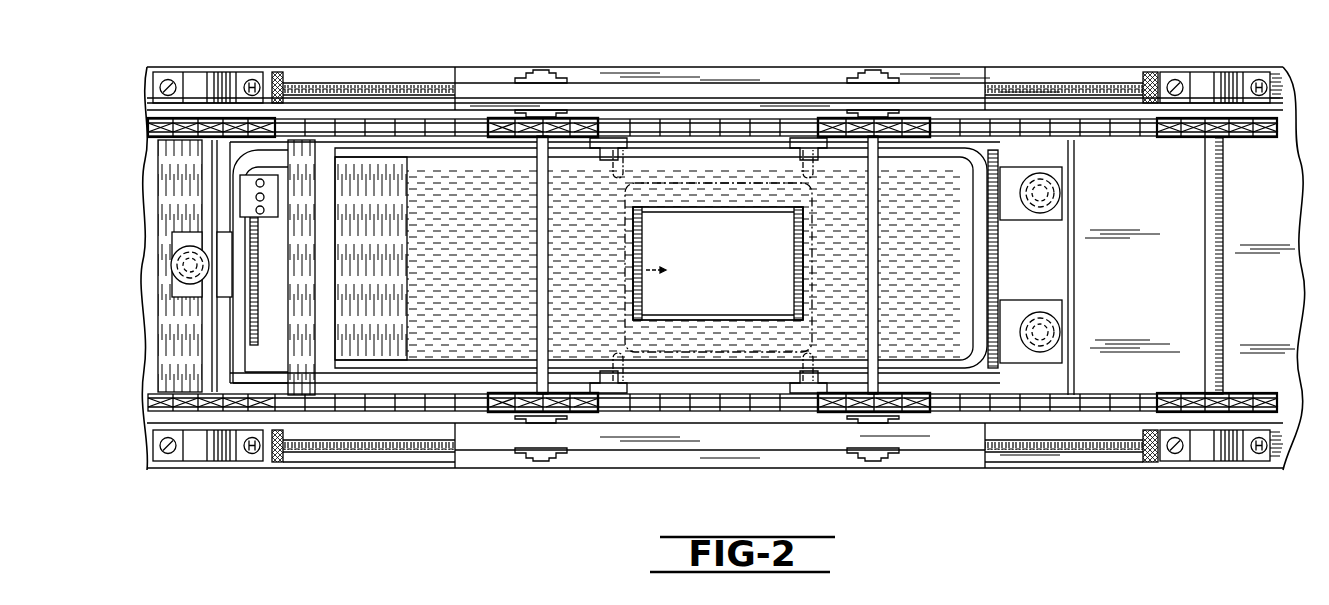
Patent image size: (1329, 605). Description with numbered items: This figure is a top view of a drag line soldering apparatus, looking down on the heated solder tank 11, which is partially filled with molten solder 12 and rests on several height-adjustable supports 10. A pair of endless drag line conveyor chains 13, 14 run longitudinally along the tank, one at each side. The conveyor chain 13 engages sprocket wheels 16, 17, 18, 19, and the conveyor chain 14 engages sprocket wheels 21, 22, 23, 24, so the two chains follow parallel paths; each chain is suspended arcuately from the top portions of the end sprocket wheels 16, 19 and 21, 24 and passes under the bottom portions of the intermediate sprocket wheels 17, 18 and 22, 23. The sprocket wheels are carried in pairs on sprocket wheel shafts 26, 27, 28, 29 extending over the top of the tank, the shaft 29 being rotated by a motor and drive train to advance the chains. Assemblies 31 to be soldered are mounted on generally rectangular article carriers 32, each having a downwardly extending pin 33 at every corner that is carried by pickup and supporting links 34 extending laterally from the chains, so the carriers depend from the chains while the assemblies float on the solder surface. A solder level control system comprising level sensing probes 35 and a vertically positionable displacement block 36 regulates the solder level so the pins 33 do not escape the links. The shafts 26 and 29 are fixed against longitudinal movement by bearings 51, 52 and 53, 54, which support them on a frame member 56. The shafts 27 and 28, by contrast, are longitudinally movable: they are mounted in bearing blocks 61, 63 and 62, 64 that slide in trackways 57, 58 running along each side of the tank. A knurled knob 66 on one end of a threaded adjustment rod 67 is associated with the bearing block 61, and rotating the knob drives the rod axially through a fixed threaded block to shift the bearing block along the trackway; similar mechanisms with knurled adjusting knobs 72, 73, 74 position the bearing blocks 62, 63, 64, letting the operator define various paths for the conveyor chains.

The height-adjustable supports 10 is at (172, 250).
The solder tank 11 is at (250, 315).
The molten solder 12 is at (435, 243).
The conveyor chain 13 is at (1090, 402).
The conveyor chain 14 is at (1062, 137).
The sprocket wheel 16 is at (148, 420).
The sprocket wheel 17 is at (500, 416).
The sprocket wheel 18 is at (913, 416).
The sprocket wheel 19 is at (1232, 394).
The sprocket wheel 21 is at (150, 136).
The sprocket wheel 22 is at (581, 119).
The sprocket wheel 23 is at (919, 118).
The sprocket wheel 24 is at (1258, 139).
The sprocket wheel shaft 26 is at (202, 305).
The sprocket wheel shaft 27 is at (540, 71).
The sprocket wheel shaft 28 is at (875, 70).
The sprocket wheel shaft 29 is at (1224, 232).
The assembly 31 is at (616, 372).
The article carrier 32 is at (699, 180).
The pin 33 is at (792, 200).
The pickup and supporting link 34 is at (790, 150).
The level sensing probe 35 is at (264, 184).
The displacement block 36 is at (330, 215).
The bearing 51 is at (196, 452).
The bearing 52 is at (198, 77).
The bearing 53 is at (1207, 452).
The bearing 54 is at (1213, 80).
The frame member 56 is at (326, 463).
The trackway 57 is at (650, 456).
The trackway 58 is at (648, 96).
The bearing block 61 is at (527, 468).
The bearing block 62 is at (850, 456).
The bearing block 63 is at (558, 75).
The bearing block 64 is at (893, 75).
The knurled knob 66 is at (276, 465).
The adjustment rod 67 is at (379, 452).
The knurled adjusting knob 72 is at (1145, 468).
The knurled adjusting knob 73 is at (279, 71).
The knurled adjusting knob 74 is at (1152, 70).